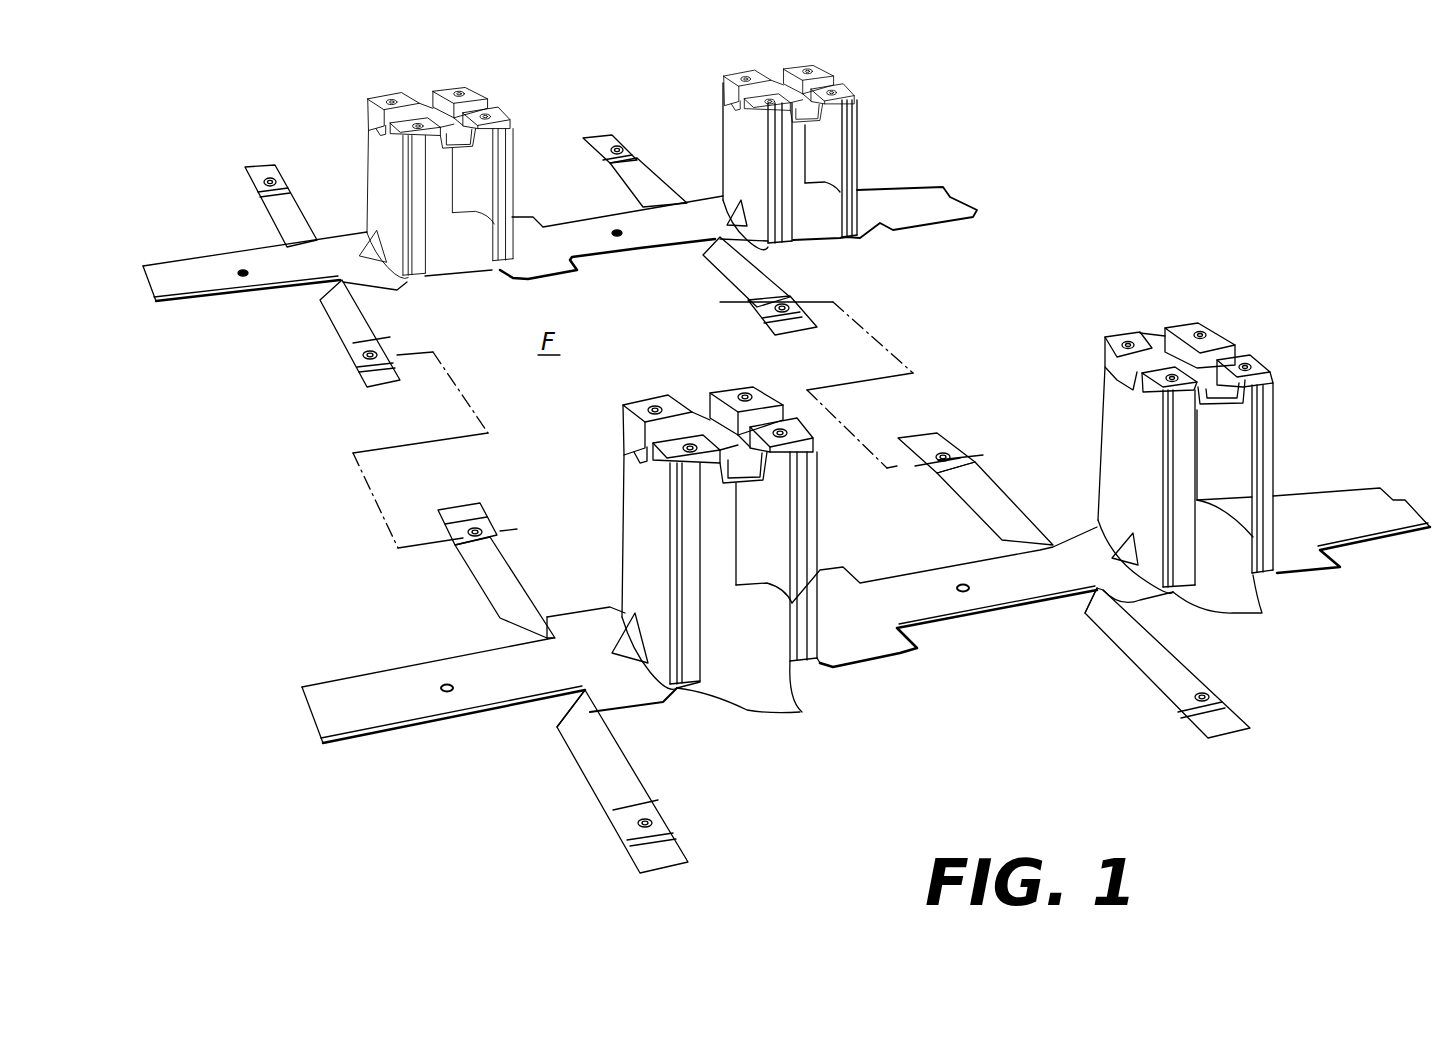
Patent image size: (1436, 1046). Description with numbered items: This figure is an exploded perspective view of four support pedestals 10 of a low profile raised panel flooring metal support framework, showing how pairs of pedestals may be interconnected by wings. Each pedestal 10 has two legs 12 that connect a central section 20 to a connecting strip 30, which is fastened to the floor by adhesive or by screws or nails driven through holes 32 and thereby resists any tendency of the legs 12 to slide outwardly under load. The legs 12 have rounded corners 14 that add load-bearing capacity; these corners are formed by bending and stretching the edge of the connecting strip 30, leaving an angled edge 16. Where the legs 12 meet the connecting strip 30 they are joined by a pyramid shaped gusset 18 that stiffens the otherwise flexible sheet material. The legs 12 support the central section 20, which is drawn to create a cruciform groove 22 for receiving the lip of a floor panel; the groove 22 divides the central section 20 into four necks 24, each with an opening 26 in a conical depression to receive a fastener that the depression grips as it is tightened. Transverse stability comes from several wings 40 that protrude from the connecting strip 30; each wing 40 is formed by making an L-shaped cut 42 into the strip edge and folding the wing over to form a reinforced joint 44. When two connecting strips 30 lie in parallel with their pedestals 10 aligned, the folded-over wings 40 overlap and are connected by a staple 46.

The support pedestal 10 is at (786, 465).
The leg 12 is at (628, 540).
The rounded corner 14 is at (800, 712).
The angled edge 16 is at (1275, 578).
The pyramid shaped gusset 18 is at (1128, 550).
The central section 20 is at (760, 384).
The cruciform groove 22 is at (757, 462).
The neck 24 is at (1185, 328).
The opening 26 is at (656, 407).
The connecting strip 30 is at (922, 588).
The hole 32 is at (443, 684).
The wing 40 is at (343, 312).
The L-shaped cut 42 is at (638, 244).
The reinforced joint 44 is at (580, 705).
The staple 46 is at (368, 362).